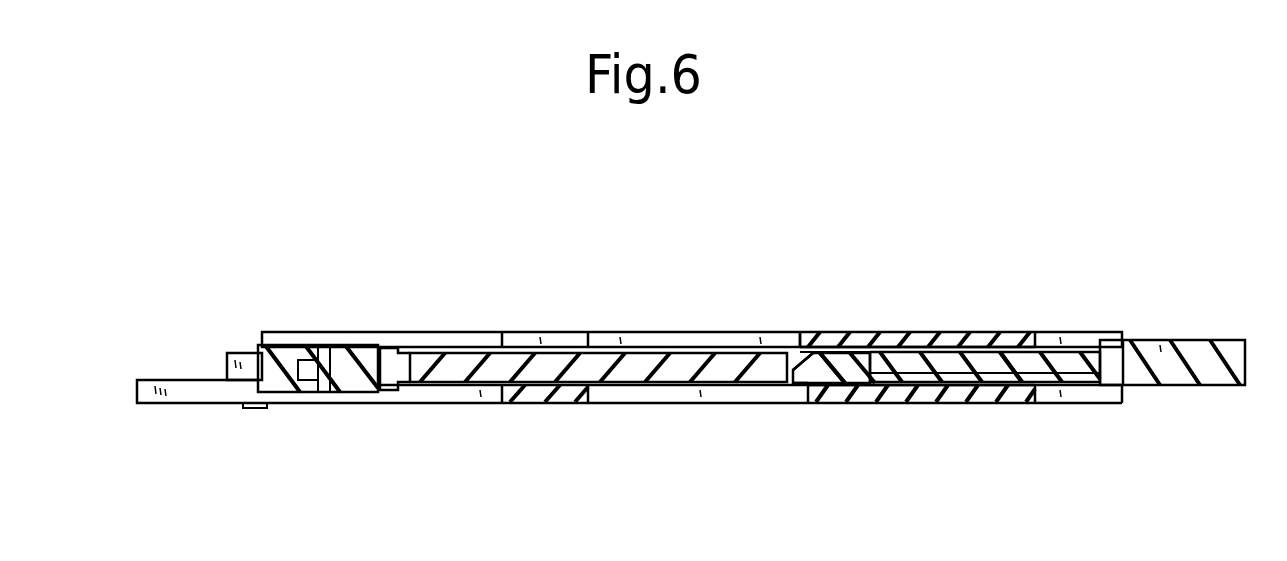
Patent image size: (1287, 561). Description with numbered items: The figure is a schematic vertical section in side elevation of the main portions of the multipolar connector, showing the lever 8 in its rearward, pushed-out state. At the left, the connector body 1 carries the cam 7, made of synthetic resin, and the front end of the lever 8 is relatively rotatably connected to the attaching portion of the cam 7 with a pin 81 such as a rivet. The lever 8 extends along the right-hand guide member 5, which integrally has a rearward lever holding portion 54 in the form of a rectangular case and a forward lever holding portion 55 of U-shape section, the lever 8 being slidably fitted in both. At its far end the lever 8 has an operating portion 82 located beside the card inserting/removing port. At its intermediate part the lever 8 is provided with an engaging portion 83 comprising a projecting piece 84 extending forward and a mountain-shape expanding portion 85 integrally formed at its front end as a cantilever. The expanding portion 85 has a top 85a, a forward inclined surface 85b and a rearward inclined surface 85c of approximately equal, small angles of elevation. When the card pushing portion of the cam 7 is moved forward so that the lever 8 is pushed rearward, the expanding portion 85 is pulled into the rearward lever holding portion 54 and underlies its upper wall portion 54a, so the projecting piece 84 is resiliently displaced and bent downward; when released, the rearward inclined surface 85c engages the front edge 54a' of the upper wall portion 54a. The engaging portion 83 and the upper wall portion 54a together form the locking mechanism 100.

The connector body 1 is at (180, 407).
The cam 7 is at (248, 350).
The pin 81 is at (317, 350).
The right-hand guide member 5 is at (667, 332).
The forward lever holding portion 55 is at (522, 403).
The lever 8 is at (642, 403).
The expanding portion 85 is at (833, 402).
The top 85a is at (842, 332).
The forward inclined surface 85b is at (787, 332).
The rearward inclined surface 85c is at (885, 332).
The rearward lever holding portion 54 is at (895, 402).
The upper wall portion 54a is at (950, 301).
The front edge 54a' is at (793, 272).
The engaging portion 83 is at (967, 402).
The projecting piece 84 is at (1020, 367).
The operating portion 82 is at (1230, 390).
The locking mechanism 100 is at (802, 410).